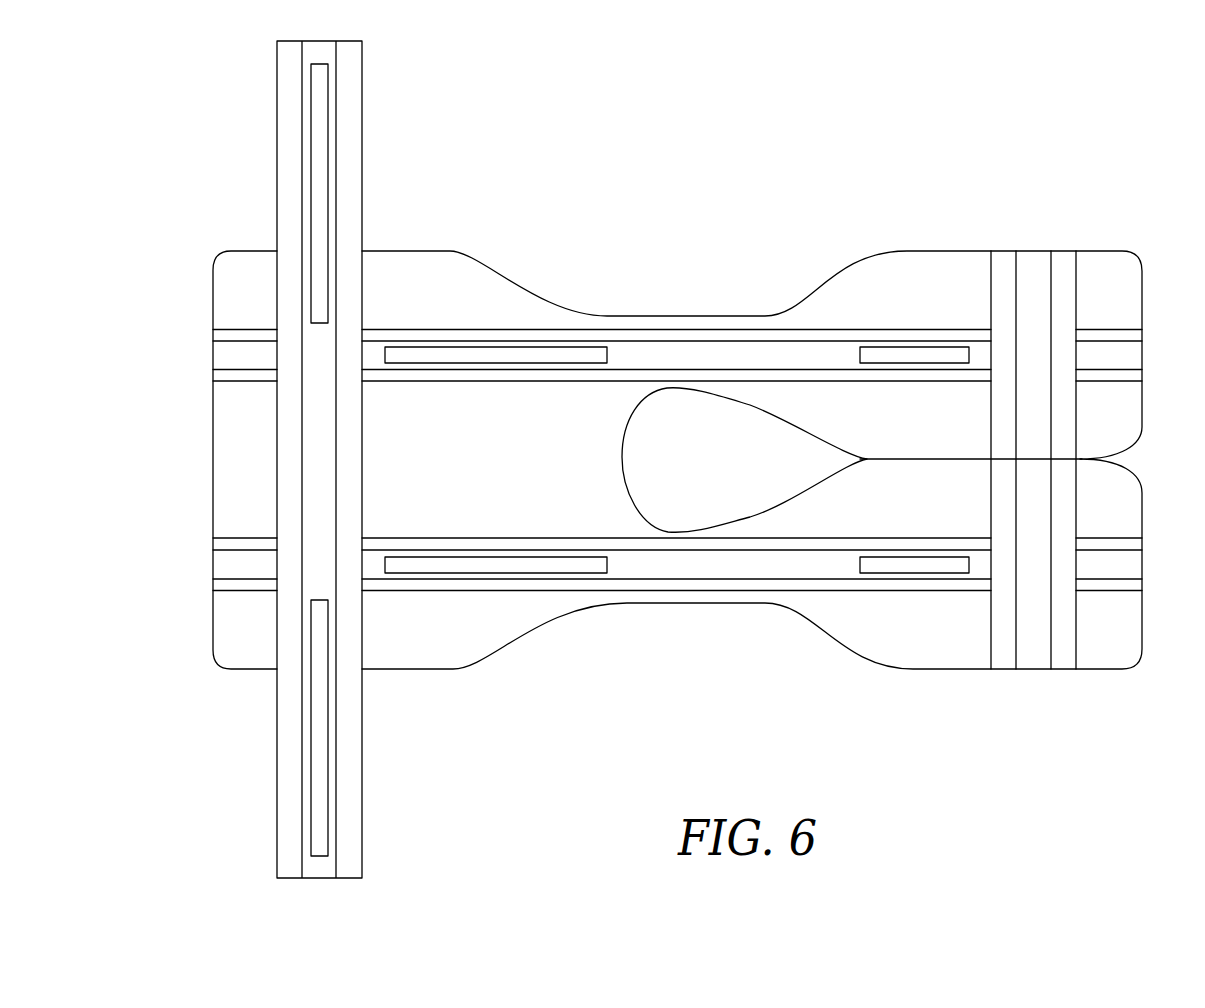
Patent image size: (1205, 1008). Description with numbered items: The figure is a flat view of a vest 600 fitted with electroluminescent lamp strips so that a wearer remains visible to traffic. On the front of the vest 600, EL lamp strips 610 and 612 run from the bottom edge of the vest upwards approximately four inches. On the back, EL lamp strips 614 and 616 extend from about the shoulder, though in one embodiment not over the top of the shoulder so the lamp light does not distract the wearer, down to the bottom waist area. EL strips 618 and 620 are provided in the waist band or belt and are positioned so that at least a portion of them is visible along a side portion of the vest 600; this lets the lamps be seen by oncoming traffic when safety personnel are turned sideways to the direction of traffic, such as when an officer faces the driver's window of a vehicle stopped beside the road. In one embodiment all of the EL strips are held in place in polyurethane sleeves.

The vest 600 is at (1108, 153).
The EL lamp strip 610 is at (948, 567).
The EL lamp strip 612 is at (948, 353).
The EL lamp strip 614 is at (530, 565).
The EL lamp strip 616 is at (508, 357).
The EL strip 618 is at (323, 795).
The EL strip 620 is at (320, 127).